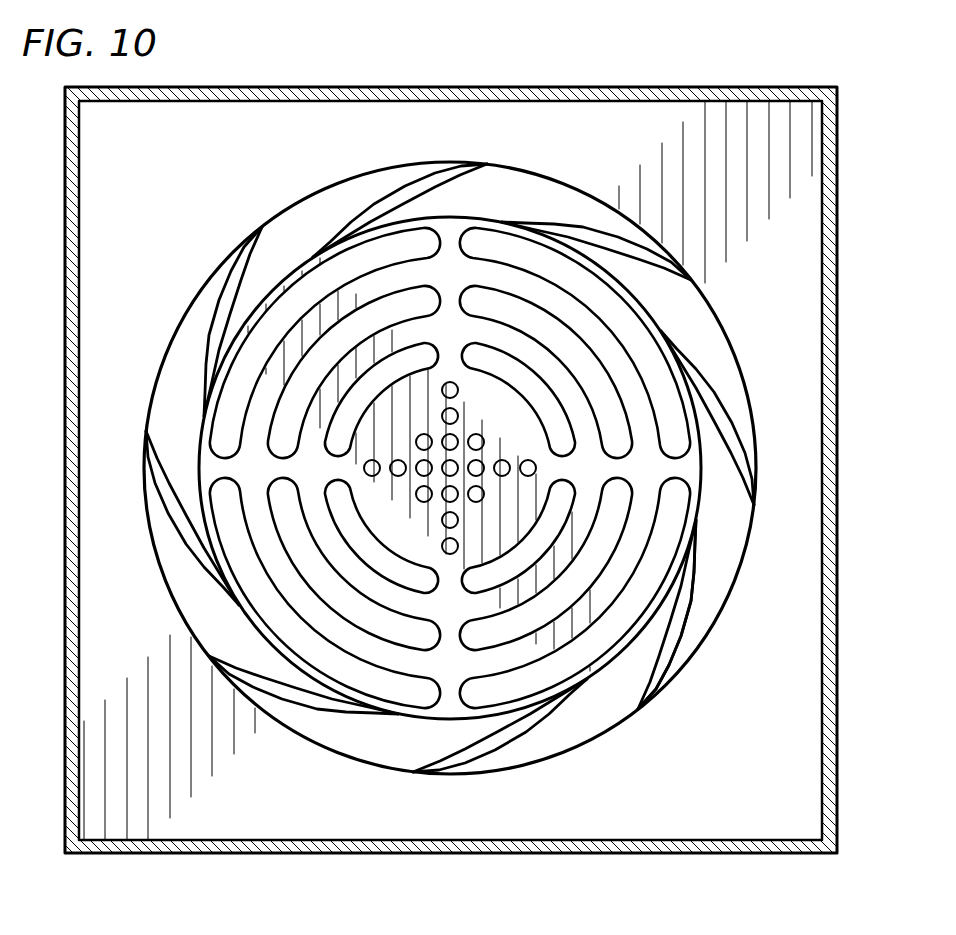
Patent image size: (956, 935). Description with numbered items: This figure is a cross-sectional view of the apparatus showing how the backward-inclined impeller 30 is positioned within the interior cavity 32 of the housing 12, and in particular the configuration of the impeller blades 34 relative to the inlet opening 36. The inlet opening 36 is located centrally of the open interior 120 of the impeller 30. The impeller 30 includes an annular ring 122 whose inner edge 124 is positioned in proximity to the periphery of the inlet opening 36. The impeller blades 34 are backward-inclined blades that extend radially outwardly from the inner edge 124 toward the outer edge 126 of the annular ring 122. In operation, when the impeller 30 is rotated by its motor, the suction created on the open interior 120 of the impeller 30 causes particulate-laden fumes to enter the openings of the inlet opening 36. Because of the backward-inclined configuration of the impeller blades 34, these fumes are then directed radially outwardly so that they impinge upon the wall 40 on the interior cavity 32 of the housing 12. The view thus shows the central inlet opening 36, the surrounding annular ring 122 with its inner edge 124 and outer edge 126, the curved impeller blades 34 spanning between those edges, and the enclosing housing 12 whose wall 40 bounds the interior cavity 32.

The housing 12 is at (838, 183).
The backward-inclined impeller 30 is at (685, 665).
The interior cavity 32 is at (806, 300).
The impeller blades 34 is at (435, 172).
The inlet opening 36 is at (672, 403).
The wall 40 is at (812, 798).
The open interior 120 is at (490, 218).
The annular ring 122 is at (310, 215).
The inner edge 124 is at (215, 395).
The outer edge 126 is at (722, 620).